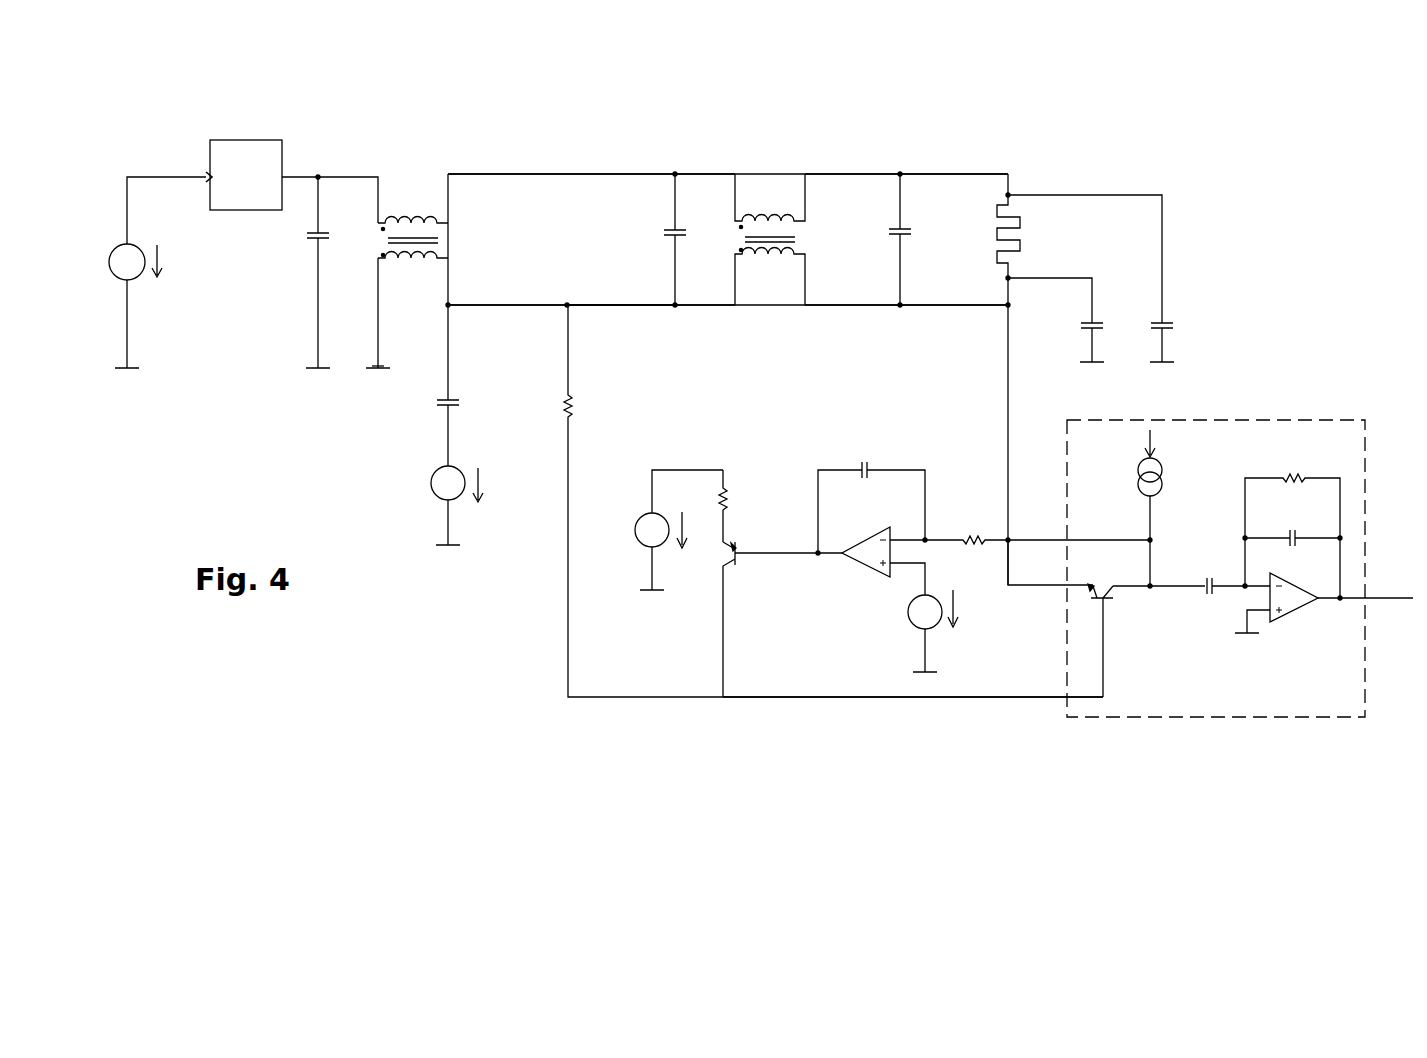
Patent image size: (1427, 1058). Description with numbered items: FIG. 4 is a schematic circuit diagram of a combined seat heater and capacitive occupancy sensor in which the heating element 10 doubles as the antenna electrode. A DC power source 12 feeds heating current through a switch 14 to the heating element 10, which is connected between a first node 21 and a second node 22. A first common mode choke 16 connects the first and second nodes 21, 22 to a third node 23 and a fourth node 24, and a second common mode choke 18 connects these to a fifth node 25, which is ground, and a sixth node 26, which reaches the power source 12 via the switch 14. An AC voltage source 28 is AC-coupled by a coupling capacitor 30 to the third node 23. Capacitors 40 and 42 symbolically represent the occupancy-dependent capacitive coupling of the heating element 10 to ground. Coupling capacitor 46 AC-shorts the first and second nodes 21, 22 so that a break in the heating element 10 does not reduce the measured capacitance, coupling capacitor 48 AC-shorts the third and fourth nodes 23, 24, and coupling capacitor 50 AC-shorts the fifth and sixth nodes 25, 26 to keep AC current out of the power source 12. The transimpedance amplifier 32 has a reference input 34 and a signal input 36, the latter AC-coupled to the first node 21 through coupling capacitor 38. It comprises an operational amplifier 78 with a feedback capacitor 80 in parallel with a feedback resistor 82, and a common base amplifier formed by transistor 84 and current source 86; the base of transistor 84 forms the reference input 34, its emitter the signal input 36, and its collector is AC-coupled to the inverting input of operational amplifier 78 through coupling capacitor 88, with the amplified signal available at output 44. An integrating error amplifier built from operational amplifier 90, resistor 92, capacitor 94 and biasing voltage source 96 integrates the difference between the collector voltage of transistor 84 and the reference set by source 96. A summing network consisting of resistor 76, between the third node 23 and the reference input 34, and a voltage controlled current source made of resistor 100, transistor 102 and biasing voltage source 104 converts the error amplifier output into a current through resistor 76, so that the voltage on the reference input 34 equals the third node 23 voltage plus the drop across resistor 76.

The heating element 10 is at (1020, 228).
The power source 12 is at (137, 276).
The switch 14 is at (246, 212).
The first common mode choke 16 is at (773, 262).
The second common mode choke 18 is at (410, 262).
The first node 21 is at (970, 307).
The second node 22 is at (952, 178).
The third node 23 is at (615, 307).
The fourth node 24 is at (562, 178).
The fifth node 25 is at (378, 346).
The sixth node 26 is at (380, 206).
The AC voltage source 28 is at (436, 492).
The coupling capacitor 30 is at (452, 398).
The transimpedance amplifier 32 is at (1063, 455).
The reference input 34 is at (1000, 695).
The signal input 36 is at (1025, 590).
The coupling capacitor 38 is at (772, 550).
The capacitor 40 is at (1095, 318).
The capacitor 42 is at (1158, 332).
The output 44 is at (1384, 597).
The coupling capacitor 46 is at (895, 238).
The coupling capacitor 48 is at (668, 238).
The coupling capacitor 50 is at (314, 240).
The resistor 76 is at (570, 408).
The operational amplifier 78 is at (1295, 622).
The feedback capacitor 80 is at (1297, 535).
The feedback resistor 82 is at (1293, 478).
The transistor 84 is at (1110, 600).
The current source 86 is at (1162, 486).
The coupling capacitor 88 is at (1210, 575).
The operational amplifier 90 is at (850, 560).
The resistor 92 is at (972, 532).
The capacitor 94 is at (872, 462).
The biasing voltage source 96 is at (912, 620).
The resistor 100 is at (732, 492).
The transistor 102 is at (738, 566).
The biasing voltage source 104 is at (634, 540).